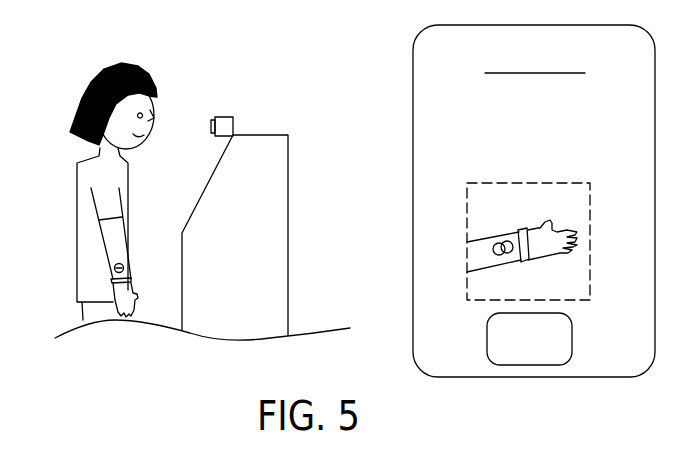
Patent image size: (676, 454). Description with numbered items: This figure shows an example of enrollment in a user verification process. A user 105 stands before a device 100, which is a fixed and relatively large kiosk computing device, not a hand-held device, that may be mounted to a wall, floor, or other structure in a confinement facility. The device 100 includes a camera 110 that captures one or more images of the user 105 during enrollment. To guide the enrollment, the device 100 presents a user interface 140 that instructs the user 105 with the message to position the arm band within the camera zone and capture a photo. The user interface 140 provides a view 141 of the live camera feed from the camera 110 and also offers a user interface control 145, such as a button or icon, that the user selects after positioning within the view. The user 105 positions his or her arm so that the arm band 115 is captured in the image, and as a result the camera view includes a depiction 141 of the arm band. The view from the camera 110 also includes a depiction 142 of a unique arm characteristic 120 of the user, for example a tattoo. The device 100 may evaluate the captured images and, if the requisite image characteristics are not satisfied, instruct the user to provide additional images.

The device 100 is at (272, 135).
The user 105 is at (89, 81).
The camera 110 is at (223, 117).
The arm band 115 is at (131, 282).
The unique arm characteristic 120 is at (116, 269).
The user interface 140 is at (413, 50).
The view of live camera feed / depiction of the arm band 141 is at (522, 232).
The depiction of unique arm characteristic 142 is at (497, 255).
The user interface control 145 is at (487, 332).